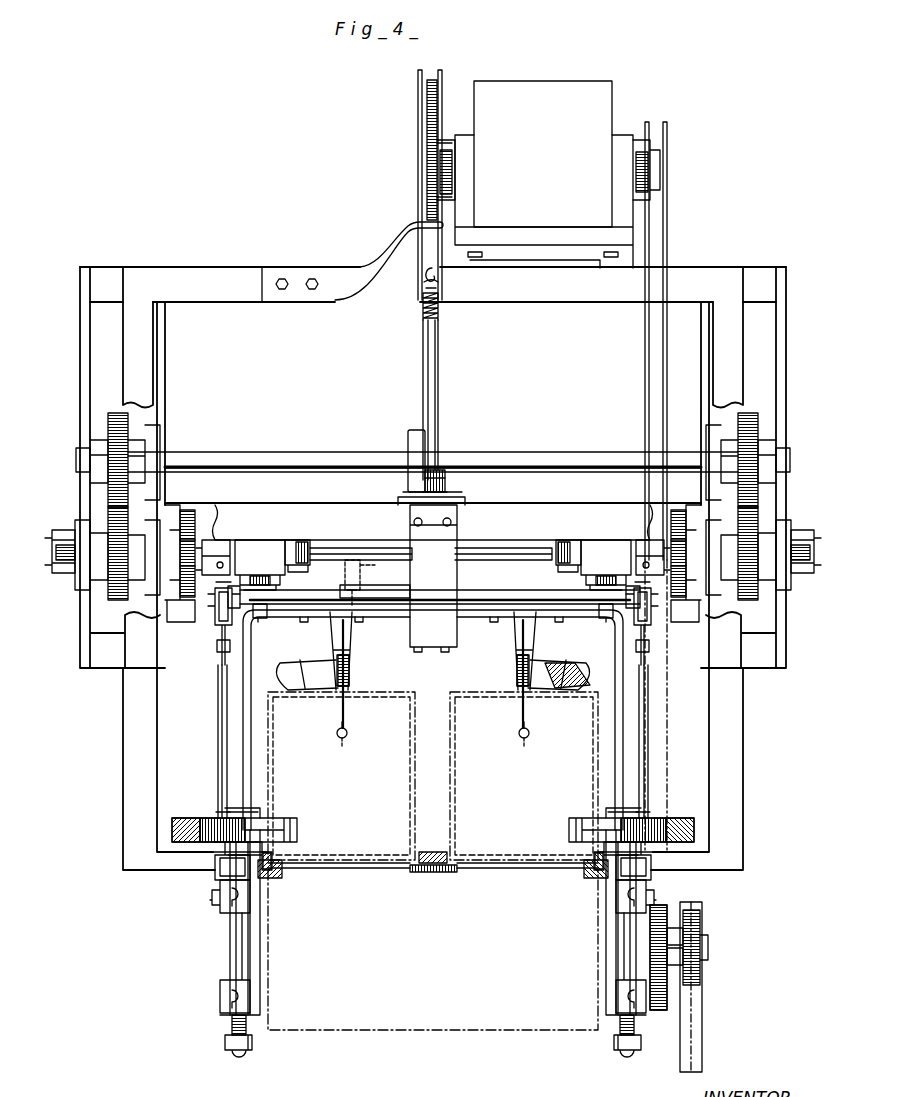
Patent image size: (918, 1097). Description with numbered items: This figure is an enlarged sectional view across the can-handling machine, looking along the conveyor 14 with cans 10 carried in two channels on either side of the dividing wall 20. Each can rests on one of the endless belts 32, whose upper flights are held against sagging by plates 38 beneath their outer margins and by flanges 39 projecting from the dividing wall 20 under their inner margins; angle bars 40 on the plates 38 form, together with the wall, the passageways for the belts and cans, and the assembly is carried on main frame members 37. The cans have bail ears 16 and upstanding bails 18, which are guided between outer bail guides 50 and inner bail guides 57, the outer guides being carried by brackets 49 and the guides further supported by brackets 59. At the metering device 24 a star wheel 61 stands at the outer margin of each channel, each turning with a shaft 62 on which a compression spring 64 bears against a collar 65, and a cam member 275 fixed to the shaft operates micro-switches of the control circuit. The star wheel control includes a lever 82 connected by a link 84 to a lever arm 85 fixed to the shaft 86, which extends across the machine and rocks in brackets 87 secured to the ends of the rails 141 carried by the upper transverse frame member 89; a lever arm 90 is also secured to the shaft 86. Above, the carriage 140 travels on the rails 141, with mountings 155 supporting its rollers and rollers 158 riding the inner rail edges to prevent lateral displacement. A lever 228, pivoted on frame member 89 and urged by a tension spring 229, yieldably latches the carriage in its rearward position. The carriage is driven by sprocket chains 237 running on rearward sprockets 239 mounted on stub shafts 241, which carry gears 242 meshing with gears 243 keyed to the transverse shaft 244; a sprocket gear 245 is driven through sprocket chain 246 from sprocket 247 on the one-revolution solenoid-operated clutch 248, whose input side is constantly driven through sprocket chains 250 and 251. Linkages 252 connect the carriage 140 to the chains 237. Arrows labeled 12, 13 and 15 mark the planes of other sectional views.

The cans 10 is at (450, 732).
The section line 12 is at (340, 422).
The section line 13 is at (752, 830).
The conveyor 14 is at (500, 1032).
The section line 15 is at (170, 422).
The bail ears 16 is at (438, 756).
The bails 18 is at (346, 720).
The dividing wall 20 is at (432, 850).
The metering device 24 is at (200, 828).
The endless belts 32 is at (396, 870).
The main frame members 37 is at (261, 962).
The plates 38 is at (282, 870).
The flanges 39 is at (452, 873).
The angle bars 40 is at (272, 858).
The brackets 49 is at (483, 612).
The outer bail guides 50 is at (338, 690).
The inner bail guides 57 is at (348, 690).
The brackets 59 is at (350, 641).
The star wheels 61 is at (298, 828).
The shaft 62 is at (232, 942).
The compression spring 64 is at (232, 1025).
The collar 65 is at (225, 1045).
The lever 82 is at (222, 890).
The link 84 is at (218, 744).
The lever arm 85 is at (222, 600).
The shaft 86 is at (478, 580).
The brackets 87 is at (258, 612).
The upper transverse frame member 89 is at (506, 513).
The lever arm 90 is at (350, 565).
The carriage 140 is at (474, 550).
The rails 141 is at (262, 550).
The mountings 155 is at (328, 552).
The rollers 158 is at (296, 548).
The lever 228 is at (438, 475).
The tension spring 229 is at (440, 312).
The sprocket chains 237 is at (196, 515).
The rearward sprockets 239 is at (172, 525).
The stub shafts 241 is at (58, 560).
The gears 242 is at (120, 585).
The gears 243 is at (110, 423).
The shaft 244 is at (532, 452).
The sprocket gear 245 is at (413, 440).
The sprocket chain 246 is at (418, 82).
The sprocket 247 is at (428, 140).
The one revolution solenoid operated clutch 248 is at (540, 82).
The sprocket chain 250 is at (668, 240).
The sprocket chain 251 is at (700, 1020).
The linkages 252 is at (222, 545).
The cam members 275 is at (238, 870).